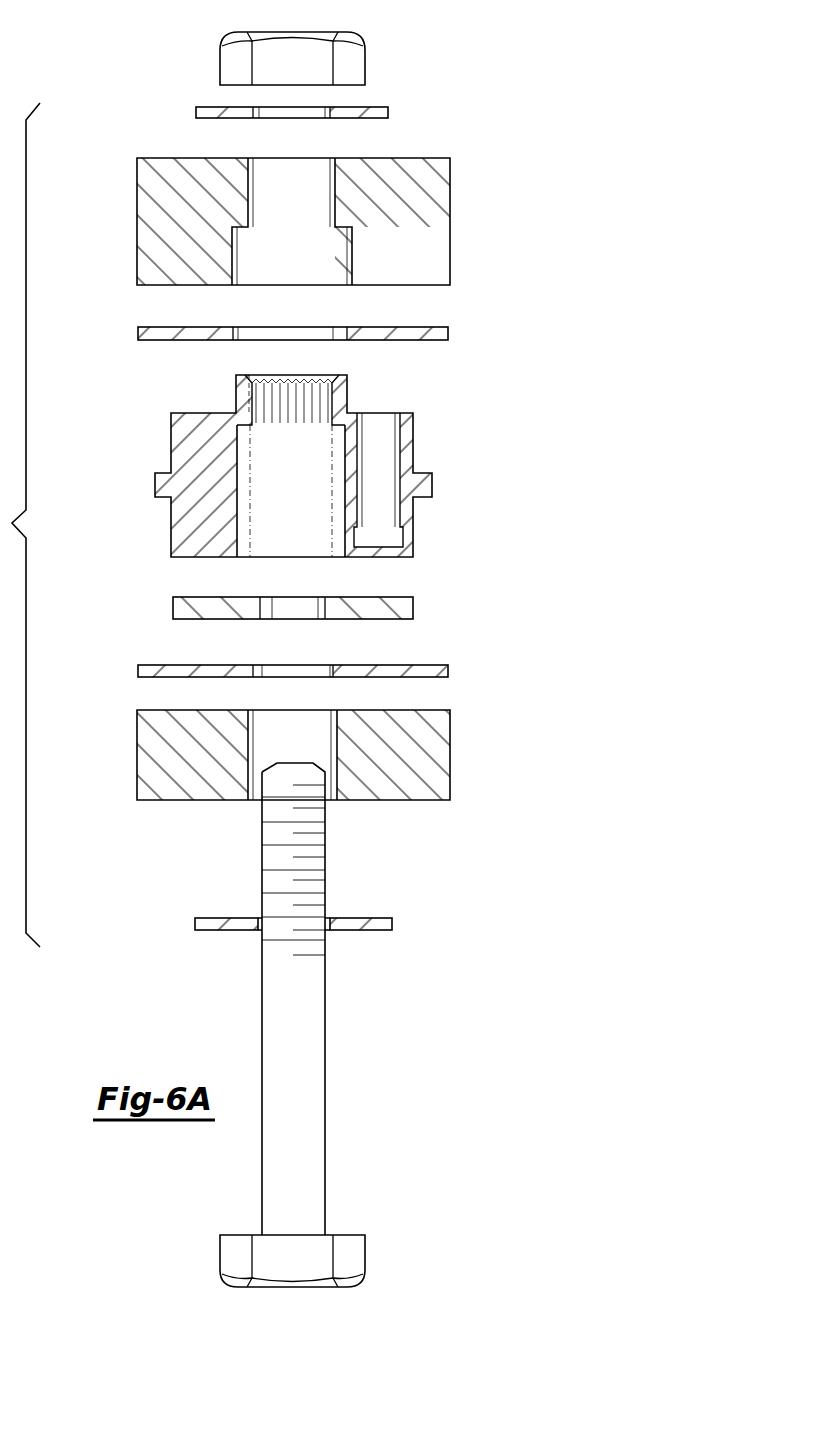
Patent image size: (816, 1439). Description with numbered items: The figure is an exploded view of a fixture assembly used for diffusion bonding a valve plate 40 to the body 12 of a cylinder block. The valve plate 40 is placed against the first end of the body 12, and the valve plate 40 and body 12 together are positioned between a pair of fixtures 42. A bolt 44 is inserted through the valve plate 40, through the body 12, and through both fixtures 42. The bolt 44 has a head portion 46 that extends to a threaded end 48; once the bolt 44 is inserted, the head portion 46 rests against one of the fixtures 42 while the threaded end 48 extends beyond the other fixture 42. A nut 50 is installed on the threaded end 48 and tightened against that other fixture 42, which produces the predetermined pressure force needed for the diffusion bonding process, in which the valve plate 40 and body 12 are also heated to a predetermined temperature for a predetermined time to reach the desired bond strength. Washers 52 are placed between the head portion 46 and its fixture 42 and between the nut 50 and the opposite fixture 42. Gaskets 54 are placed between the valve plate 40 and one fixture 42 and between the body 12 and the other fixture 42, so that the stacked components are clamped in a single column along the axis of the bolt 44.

The body 12 is at (408, 433).
The valve plate 40 is at (178, 607).
The fixtures 42 is at (433, 220).
The bolt 44 is at (325, 1115).
The head portion 46 is at (366, 1252).
The threaded end 48 is at (266, 857).
The nut 50 is at (354, 52).
The washers 52 is at (390, 113).
The gaskets 54 is at (445, 330).